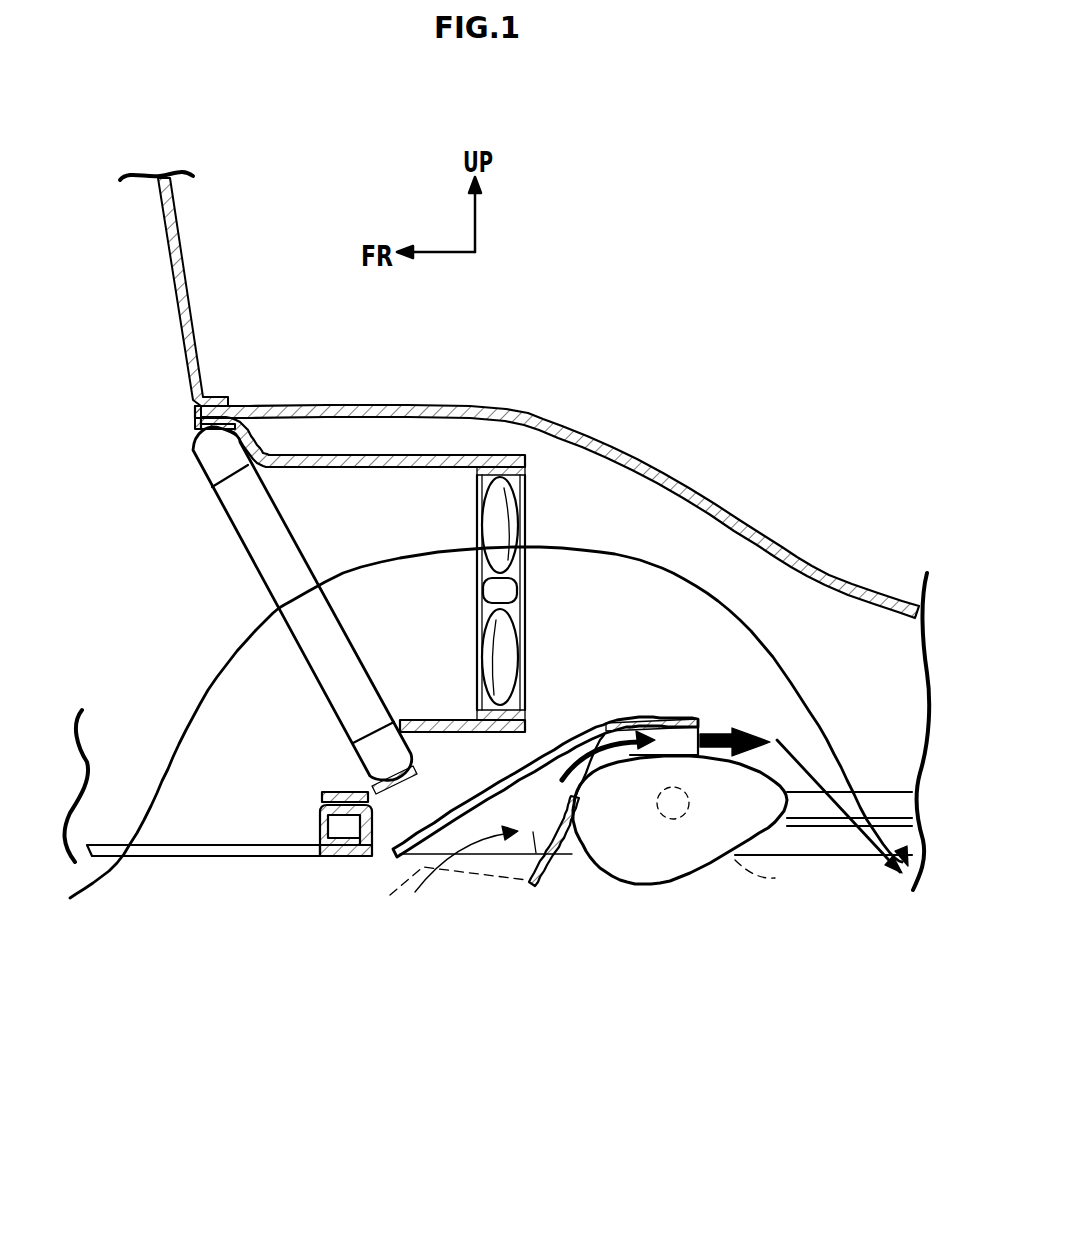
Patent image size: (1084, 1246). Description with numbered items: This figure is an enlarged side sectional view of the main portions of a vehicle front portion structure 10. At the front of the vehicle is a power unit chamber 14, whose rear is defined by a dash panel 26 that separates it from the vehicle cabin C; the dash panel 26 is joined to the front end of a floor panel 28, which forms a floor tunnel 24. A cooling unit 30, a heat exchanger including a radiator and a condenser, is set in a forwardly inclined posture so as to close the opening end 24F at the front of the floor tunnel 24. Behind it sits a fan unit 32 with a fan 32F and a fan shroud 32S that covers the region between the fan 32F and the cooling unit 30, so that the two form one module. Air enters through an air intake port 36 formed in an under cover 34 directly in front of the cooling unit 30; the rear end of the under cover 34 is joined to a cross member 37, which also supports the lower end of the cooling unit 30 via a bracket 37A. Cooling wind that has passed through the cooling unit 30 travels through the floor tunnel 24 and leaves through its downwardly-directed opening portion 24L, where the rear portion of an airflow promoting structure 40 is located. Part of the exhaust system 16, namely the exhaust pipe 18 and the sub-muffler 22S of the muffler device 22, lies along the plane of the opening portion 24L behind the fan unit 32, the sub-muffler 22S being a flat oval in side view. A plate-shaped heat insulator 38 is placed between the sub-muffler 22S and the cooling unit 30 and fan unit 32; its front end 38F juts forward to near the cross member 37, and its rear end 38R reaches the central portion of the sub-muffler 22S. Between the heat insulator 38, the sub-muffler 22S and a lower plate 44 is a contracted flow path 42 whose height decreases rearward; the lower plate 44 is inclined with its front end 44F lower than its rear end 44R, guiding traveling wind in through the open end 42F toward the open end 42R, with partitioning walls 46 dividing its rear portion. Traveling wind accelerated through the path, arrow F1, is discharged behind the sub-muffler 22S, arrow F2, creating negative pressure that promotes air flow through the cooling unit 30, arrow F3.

The vehicle front portion structure 10 is at (176, 952).
The power unit chamber 14 is at (76, 569).
The exhaust system 16 is at (740, 942).
The exhaust pipe 18 is at (817, 815).
The muffler device 22 is at (590, 890).
The sub-muffler 22S is at (650, 862).
The floor tunnel 24 is at (673, 482).
The opening end 24F is at (193, 447).
The downwardly-directed opening portion 24L is at (825, 847).
The dash panel 26 is at (183, 247).
The floor panel 28 is at (768, 542).
The cooling unit 30 is at (313, 550).
The fan unit 32 is at (697, 320).
The fan shroud 32S is at (437, 452).
The fan 32F is at (530, 491).
The under cover 34 is at (337, 855).
The air intake port 36 is at (212, 848).
The cross member 37 is at (320, 833).
The bracket 37A is at (337, 793).
The heat insulator 38 is at (447, 813).
The front end of heat insulator 38F is at (398, 852).
The rear end of heat insulator 38R is at (703, 722).
The airflow promoting structure 40 is at (572, 728).
The contracted flow path 42 is at (507, 853).
The open end at front side of contracted flow path 42F is at (418, 878).
The open end at rear side of contracted flow path 42R is at (697, 737).
The lower plate 44 is at (550, 880).
The front end of lower plate 44F is at (540, 888).
The rear end of lower plate 44R is at (585, 800).
The partitioning walls 46 is at (652, 728).
The vehicle cabin C is at (851, 393).
The arrow F1 is at (640, 763).
The arrow F2 is at (761, 745).
The arrow F3 is at (489, 706).